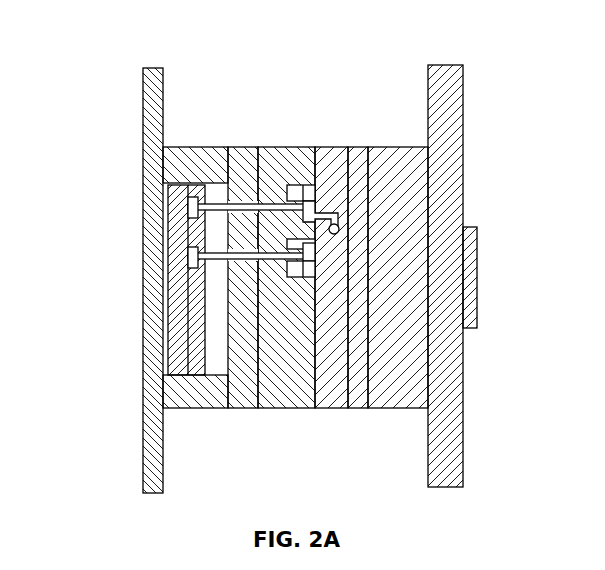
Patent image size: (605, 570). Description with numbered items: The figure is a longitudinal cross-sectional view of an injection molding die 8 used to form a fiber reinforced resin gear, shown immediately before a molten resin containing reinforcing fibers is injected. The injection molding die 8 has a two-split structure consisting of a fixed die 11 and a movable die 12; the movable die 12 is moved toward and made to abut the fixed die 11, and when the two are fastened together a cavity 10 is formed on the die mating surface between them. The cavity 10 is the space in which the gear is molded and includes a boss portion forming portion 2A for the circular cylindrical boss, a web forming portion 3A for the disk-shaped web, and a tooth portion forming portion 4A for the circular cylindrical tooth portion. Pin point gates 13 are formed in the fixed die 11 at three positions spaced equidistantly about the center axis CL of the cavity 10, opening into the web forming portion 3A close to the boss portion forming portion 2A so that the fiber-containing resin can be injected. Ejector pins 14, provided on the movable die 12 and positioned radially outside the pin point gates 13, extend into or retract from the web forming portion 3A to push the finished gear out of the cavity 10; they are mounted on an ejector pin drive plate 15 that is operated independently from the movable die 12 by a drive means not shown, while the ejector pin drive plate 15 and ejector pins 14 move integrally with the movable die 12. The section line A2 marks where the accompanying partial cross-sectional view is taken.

The injection molding die 8 is at (311, 247).
The cavity 10 is at (311, 184).
The fixed die 11 is at (385, 147).
The movable die 12 is at (211, 146).
The pin point gates 13 is at (315, 176).
The ejector pins 14 is at (216, 203).
The ejector pin drive plate 15 is at (188, 320).
The boss portion forming portion 2A is at (318, 246).
The web forming portion 3A is at (317, 277).
The tooth portion forming portion 4A is at (313, 168).
The center axis CL is at (477, 233).
The line A2- A2 is at (302, 147).